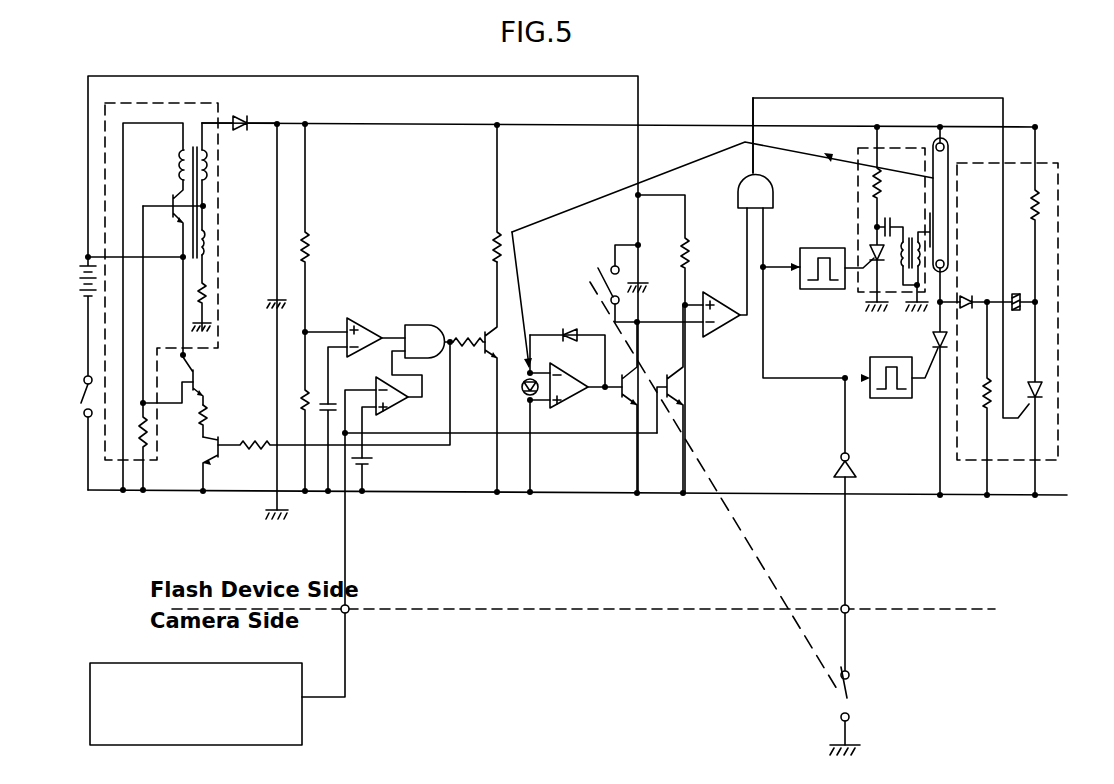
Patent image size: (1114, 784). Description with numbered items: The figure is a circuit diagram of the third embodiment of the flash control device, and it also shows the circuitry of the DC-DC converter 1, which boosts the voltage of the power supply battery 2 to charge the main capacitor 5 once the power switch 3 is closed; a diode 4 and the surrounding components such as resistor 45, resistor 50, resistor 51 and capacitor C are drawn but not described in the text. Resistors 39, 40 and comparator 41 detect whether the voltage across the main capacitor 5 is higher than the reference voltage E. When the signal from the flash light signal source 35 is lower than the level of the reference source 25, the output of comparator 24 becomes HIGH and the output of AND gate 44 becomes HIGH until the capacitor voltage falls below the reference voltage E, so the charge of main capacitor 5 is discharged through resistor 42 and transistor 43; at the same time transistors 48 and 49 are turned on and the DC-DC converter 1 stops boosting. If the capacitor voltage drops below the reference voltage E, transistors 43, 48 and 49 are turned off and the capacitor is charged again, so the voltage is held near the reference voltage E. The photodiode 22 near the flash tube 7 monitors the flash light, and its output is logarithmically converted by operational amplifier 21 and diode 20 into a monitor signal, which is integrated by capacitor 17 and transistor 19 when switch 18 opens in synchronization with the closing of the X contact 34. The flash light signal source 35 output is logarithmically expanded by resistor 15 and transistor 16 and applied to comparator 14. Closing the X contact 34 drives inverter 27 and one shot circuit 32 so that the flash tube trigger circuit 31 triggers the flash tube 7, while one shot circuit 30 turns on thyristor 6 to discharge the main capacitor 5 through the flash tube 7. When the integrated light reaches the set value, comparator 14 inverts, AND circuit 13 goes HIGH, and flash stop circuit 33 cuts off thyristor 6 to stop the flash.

The DC-DC converter 1 is at (190, 103).
The power supply battery 2 is at (78, 280).
The power switch 3 is at (82, 400).
The rectifier diode 4 is at (243, 117).
The main capacitor 5 is at (268, 302).
The thyristor 6 is at (933, 334).
The flash tube 7 is at (949, 175).
The AND circuit 13 is at (778, 172).
The comparator 14 is at (730, 325).
The resistor 15 is at (697, 248).
The transistor 16 is at (676, 387).
The capacitor 17 is at (644, 280).
The switch 18 is at (596, 270).
The transistor 19 is at (630, 398).
The diode 20 is at (570, 330).
The operational amplifier 21 is at (566, 402).
The photodiode 22 is at (520, 393).
The comparator 24 is at (499, 417).
The reference source 25 is at (372, 462).
The inverter 27 is at (841, 457).
The one shot circuit 30 is at (895, 398).
The flash tube trigger circuit 31 is at (870, 178).
The one shot circuit 32 is at (833, 249).
The flash stop circuit 33 is at (1046, 207).
The X contact 34 is at (842, 700).
The flash light signal source 35 is at (90, 712).
The resistor 39 is at (310, 252).
The resistor 40 is at (300, 396).
The comparator 41 is at (357, 318).
The resistor 42 is at (494, 247).
The transistor 43 is at (490, 352).
The AND gate 44 is at (412, 325).
The resistor 45 is at (464, 340).
The transistor 48 is at (200, 360).
The transistor 49 is at (225, 458).
The resistor 50 is at (334, 395).
The resistor 51 is at (214, 404).
The reference voltage E is at (321, 447).
The main capacitor C is at (1016, 294).